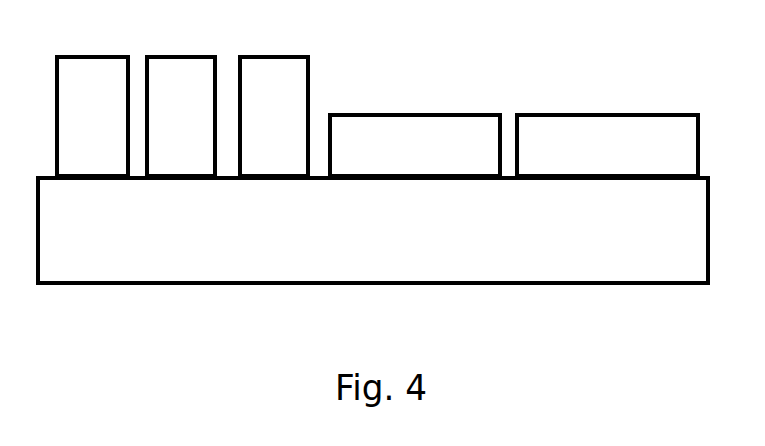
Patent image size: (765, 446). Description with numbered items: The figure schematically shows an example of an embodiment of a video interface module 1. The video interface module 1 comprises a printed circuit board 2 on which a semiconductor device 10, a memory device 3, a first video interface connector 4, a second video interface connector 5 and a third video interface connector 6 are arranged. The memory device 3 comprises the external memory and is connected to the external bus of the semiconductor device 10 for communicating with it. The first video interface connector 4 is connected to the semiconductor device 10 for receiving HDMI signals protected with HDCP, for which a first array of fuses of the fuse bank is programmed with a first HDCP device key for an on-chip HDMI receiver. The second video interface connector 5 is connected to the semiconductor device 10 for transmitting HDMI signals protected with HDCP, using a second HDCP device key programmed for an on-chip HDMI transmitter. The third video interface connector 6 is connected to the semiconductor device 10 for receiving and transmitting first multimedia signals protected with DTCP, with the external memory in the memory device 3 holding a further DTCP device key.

The video interface module 1 is at (621, 78).
The printed circuit board 2 is at (366, 246).
The memory device 3 is at (600, 156).
The first video interface connector 4 is at (85, 128).
The second video interface connector 5 is at (173, 128).
The third video interface connector 6 is at (265, 128).
The semiconductor device 10 is at (402, 156).